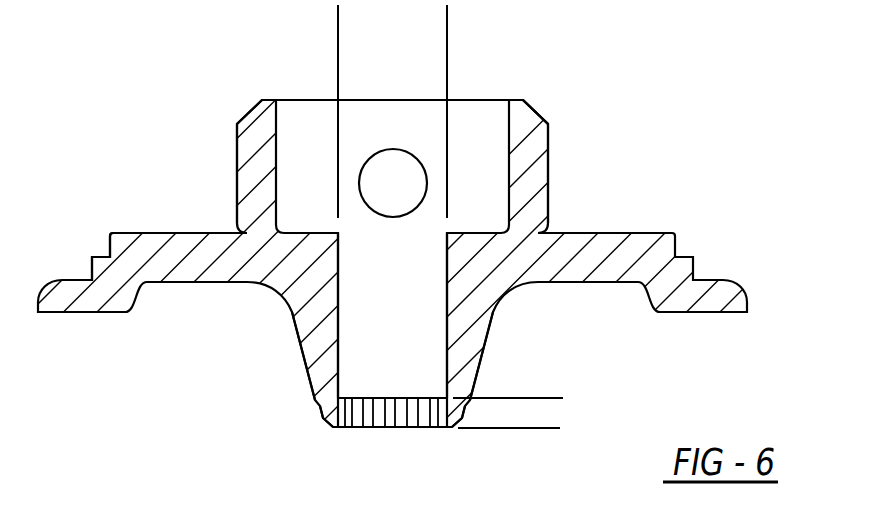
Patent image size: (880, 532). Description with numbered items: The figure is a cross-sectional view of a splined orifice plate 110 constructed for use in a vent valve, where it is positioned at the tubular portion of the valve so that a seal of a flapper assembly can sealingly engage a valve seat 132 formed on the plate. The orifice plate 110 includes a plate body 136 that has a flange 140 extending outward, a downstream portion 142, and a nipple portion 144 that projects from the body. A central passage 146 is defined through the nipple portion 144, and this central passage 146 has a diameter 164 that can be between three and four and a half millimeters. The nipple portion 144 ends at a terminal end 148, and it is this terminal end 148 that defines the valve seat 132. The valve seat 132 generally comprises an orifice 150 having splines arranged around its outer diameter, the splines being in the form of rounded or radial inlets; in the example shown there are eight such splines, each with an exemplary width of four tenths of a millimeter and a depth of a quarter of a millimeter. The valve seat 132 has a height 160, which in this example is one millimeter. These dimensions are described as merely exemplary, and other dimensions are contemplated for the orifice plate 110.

The orifice plate 110 is at (665, 247).
The valve seat 132 is at (432, 428).
The plate body 136 is at (528, 222).
The flange 140 is at (123, 240).
The downstream portion 142 is at (532, 128).
The nipple portion 144 is at (322, 368).
The central passage 146 is at (337, 300).
The terminal end 148 is at (327, 430).
The orifice 150 is at (370, 418).
The height 160 is at (543, 352).
The diameter 164 is at (275, 15).